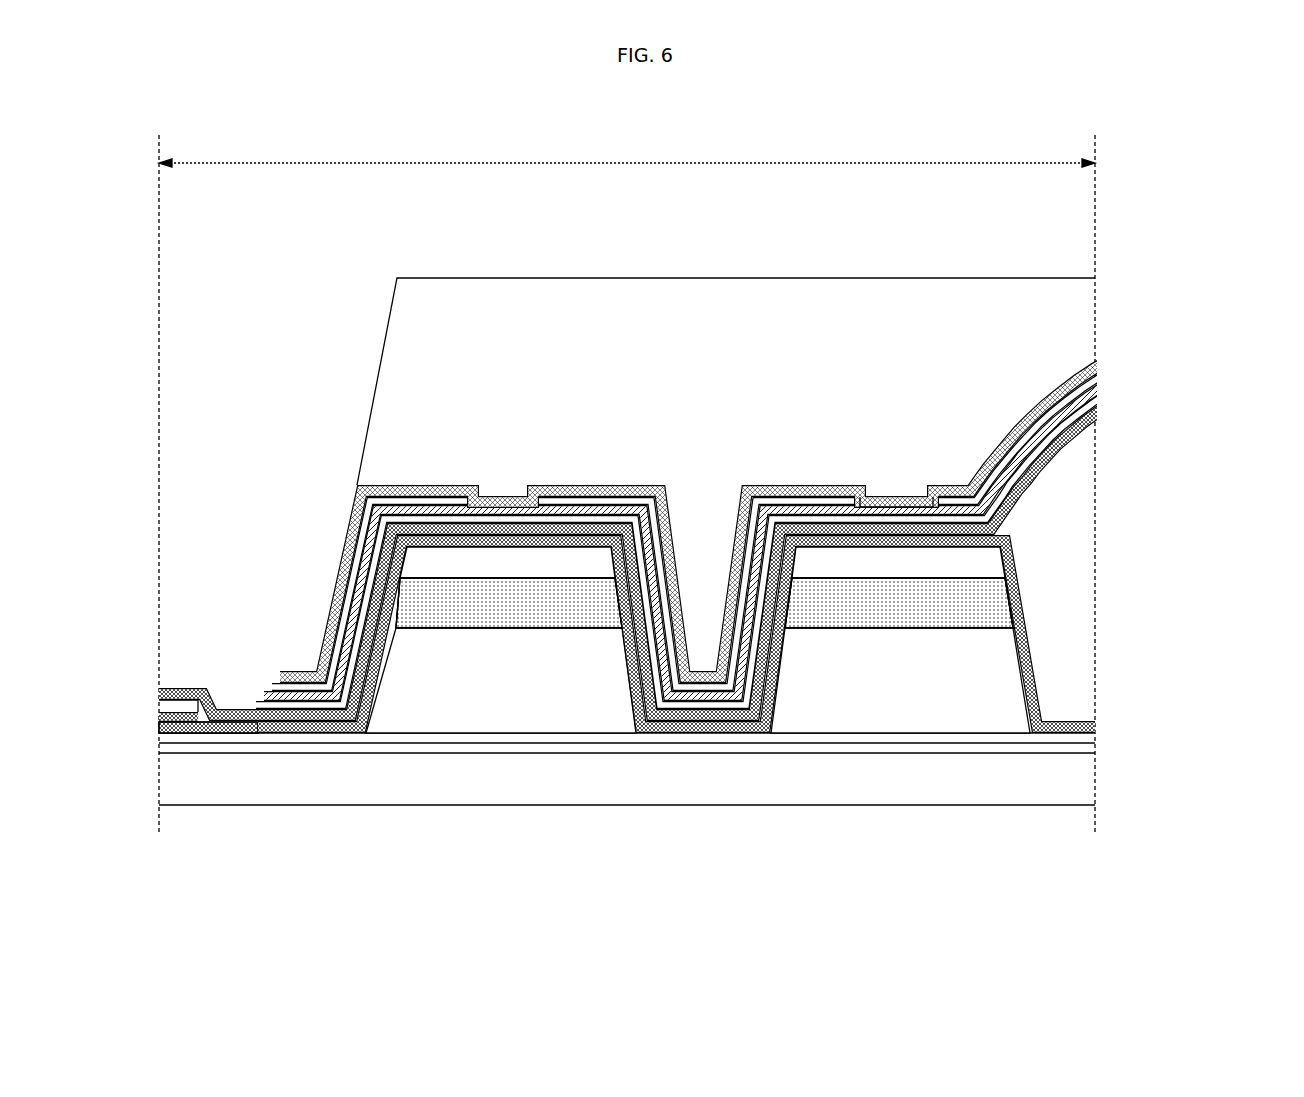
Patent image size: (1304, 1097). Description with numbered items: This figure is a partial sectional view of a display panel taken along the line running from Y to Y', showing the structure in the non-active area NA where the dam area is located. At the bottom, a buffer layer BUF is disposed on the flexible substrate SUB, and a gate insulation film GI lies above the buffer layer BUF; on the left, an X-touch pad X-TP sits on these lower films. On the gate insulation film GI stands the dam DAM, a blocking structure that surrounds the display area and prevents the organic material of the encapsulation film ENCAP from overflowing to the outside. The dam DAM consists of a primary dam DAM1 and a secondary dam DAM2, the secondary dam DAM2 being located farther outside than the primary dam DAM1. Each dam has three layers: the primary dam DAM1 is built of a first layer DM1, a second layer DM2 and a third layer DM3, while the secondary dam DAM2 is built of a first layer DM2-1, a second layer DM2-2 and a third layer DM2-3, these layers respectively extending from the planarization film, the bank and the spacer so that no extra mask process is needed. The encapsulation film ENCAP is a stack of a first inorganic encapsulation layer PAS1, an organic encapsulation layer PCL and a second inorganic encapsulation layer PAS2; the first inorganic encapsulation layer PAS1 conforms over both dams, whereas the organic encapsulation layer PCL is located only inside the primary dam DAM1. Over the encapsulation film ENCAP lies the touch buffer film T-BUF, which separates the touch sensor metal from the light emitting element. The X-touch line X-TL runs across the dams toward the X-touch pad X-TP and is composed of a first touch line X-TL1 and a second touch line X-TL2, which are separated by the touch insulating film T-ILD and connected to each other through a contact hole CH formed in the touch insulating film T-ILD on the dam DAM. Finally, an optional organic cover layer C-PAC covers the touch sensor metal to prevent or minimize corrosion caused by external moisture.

The sectional line Y-Y' Y is at (160, 475).
The sectional line Y- Y' is at (1094, 475).
The non-active area NA is at (627, 154).
The substrate SUB is at (1075, 797).
The buffer layer BUF is at (1097, 750).
The gate insulation film GI is at (1080, 740).
The X-touch pad X-TP is at (240, 745).
The dam DAM is at (698, 755).
The primary dam DAM1 is at (900, 731).
The secondary dam DAM2 is at (501, 731).
The first layer of the primary dam DM1 is at (983, 705).
The second layer of the primary dam DM2 is at (908, 600).
The third layer of the primary dam DM3 is at (836, 572).
The first layer of the secondary dam DM2-1 is at (598, 700).
The second layer of the secondary dam DM2-2 is at (524, 600).
The third layer of the secondary dam DM2-3 is at (449, 572).
The encapsulation film ENCAP is at (702, 559).
The first inorganic encapsulation layer PAS1 is at (1097, 728).
The organic encapsulation layer PCL is at (1073, 577).
The second inorganic encapsulation layer PAS2 is at (1166, 694).
The touch buffer film T-BUF is at (1098, 405).
The touch insulating film T-ILD is at (1098, 380).
The X-touch line X-TL is at (774, 518).
The first touch line layer X-TL1 is at (1098, 393).
The second touch line layer X-TL2 is at (1098, 370).
The contact hole CH is at (868, 490).
The organic cover layer C-PAC is at (1075, 320).